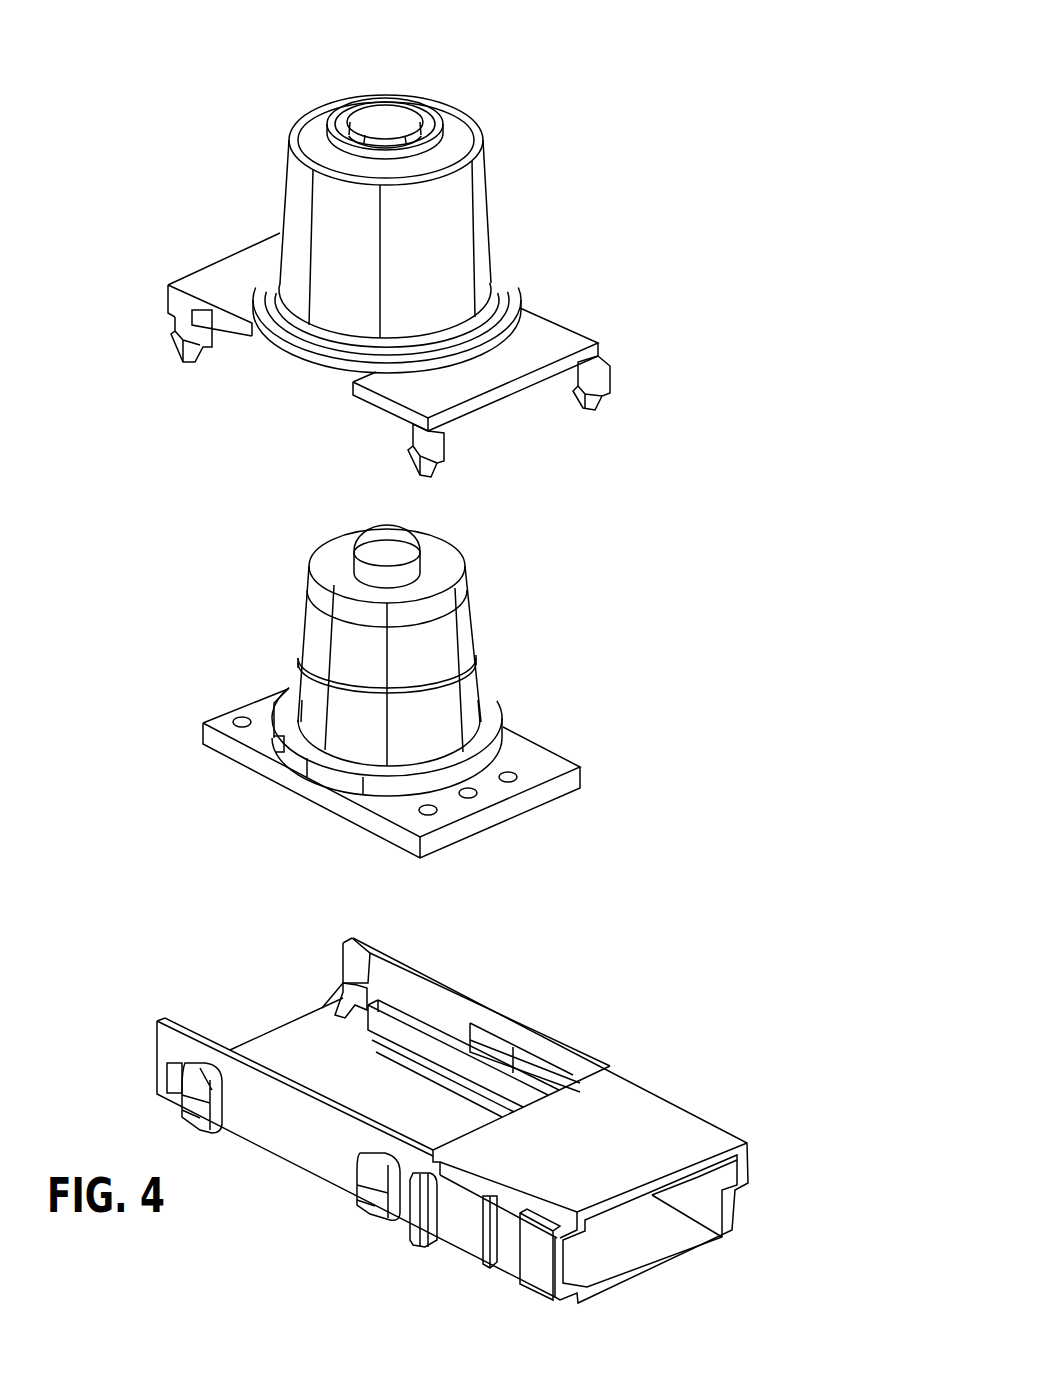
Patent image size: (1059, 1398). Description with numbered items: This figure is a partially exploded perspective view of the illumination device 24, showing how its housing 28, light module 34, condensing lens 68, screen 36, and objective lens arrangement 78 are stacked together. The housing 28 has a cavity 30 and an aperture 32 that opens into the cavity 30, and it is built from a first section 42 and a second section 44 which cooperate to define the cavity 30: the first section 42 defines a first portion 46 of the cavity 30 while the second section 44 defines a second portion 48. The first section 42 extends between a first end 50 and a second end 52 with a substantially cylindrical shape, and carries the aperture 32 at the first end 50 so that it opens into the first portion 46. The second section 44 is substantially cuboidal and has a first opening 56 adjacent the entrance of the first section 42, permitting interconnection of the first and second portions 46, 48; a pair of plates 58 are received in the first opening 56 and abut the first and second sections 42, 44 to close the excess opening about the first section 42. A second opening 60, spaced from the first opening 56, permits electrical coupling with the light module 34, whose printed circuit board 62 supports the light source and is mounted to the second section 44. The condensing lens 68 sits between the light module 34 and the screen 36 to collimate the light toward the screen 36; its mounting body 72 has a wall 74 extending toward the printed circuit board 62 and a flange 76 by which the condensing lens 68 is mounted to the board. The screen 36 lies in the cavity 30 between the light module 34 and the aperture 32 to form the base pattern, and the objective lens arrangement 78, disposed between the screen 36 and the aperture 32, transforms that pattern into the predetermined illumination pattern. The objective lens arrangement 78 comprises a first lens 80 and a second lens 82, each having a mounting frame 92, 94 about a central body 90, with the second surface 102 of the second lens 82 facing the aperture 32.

The illumination device 24 is at (674, 110).
The housing 28 is at (551, 311).
The cavity 30 is at (388, 132).
The aperture 32 is at (425, 124).
The light module 34 is at (580, 756).
The screen 36 is at (456, 673).
The first section 42 is at (500, 204).
The second section 44 is at (440, 1256).
The first portion 46 is at (360, 125).
The second portion 48 is at (420, 993).
The first end 50 is at (410, 94).
The second end 52 is at (285, 361).
The first opening 56 is at (522, 1022).
The pair of plates 58 is at (195, 282).
The second opening 60 is at (710, 1200).
The printed circuit board 62 is at (543, 797).
The condensing lens 68 is at (312, 678).
The mounting body 72 is at (464, 710).
The wall 74 is at (318, 730).
The flange 76 is at (352, 783).
The objective lens arrangement 78 is at (475, 563).
The first lens 80 is at (302, 625).
The second lens 82 is at (308, 578).
The central body 90 is at (402, 546).
The mounting frame 92 is at (456, 626).
The mounting frame 94 is at (452, 604).
The second surface 102 is at (383, 543).